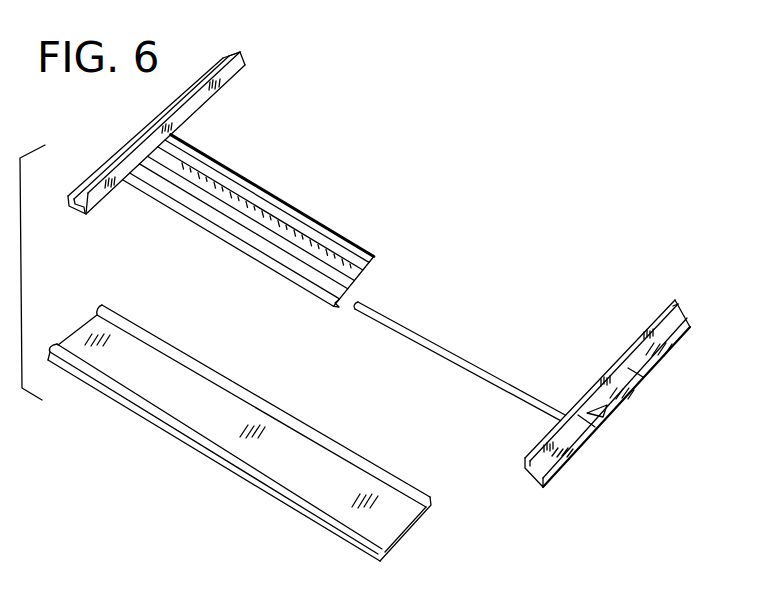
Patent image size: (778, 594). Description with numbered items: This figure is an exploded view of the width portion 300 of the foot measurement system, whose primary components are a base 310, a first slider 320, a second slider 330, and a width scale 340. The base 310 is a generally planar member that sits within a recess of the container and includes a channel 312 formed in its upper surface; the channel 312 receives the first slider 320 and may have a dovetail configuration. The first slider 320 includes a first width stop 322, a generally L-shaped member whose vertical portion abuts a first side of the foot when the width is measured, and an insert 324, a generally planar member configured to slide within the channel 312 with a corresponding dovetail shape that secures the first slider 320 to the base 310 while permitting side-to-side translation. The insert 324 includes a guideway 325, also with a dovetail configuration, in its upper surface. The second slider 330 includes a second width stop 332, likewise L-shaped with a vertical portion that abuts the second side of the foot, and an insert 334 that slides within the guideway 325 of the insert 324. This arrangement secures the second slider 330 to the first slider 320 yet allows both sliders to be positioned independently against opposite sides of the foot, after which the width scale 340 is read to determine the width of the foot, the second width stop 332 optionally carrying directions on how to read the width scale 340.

The width portion 300 is at (485, 220).
The base 310 is at (197, 450).
The channel 312 is at (287, 447).
The first slider 320 is at (124, 180).
The first width stop 322 is at (245, 63).
The insert 324 is at (215, 168).
The guideway 325 is at (294, 260).
The second slider 330 is at (567, 410).
The second width stop 332 is at (663, 312).
The insert 334 is at (421, 337).
The width scale 340 is at (287, 223).